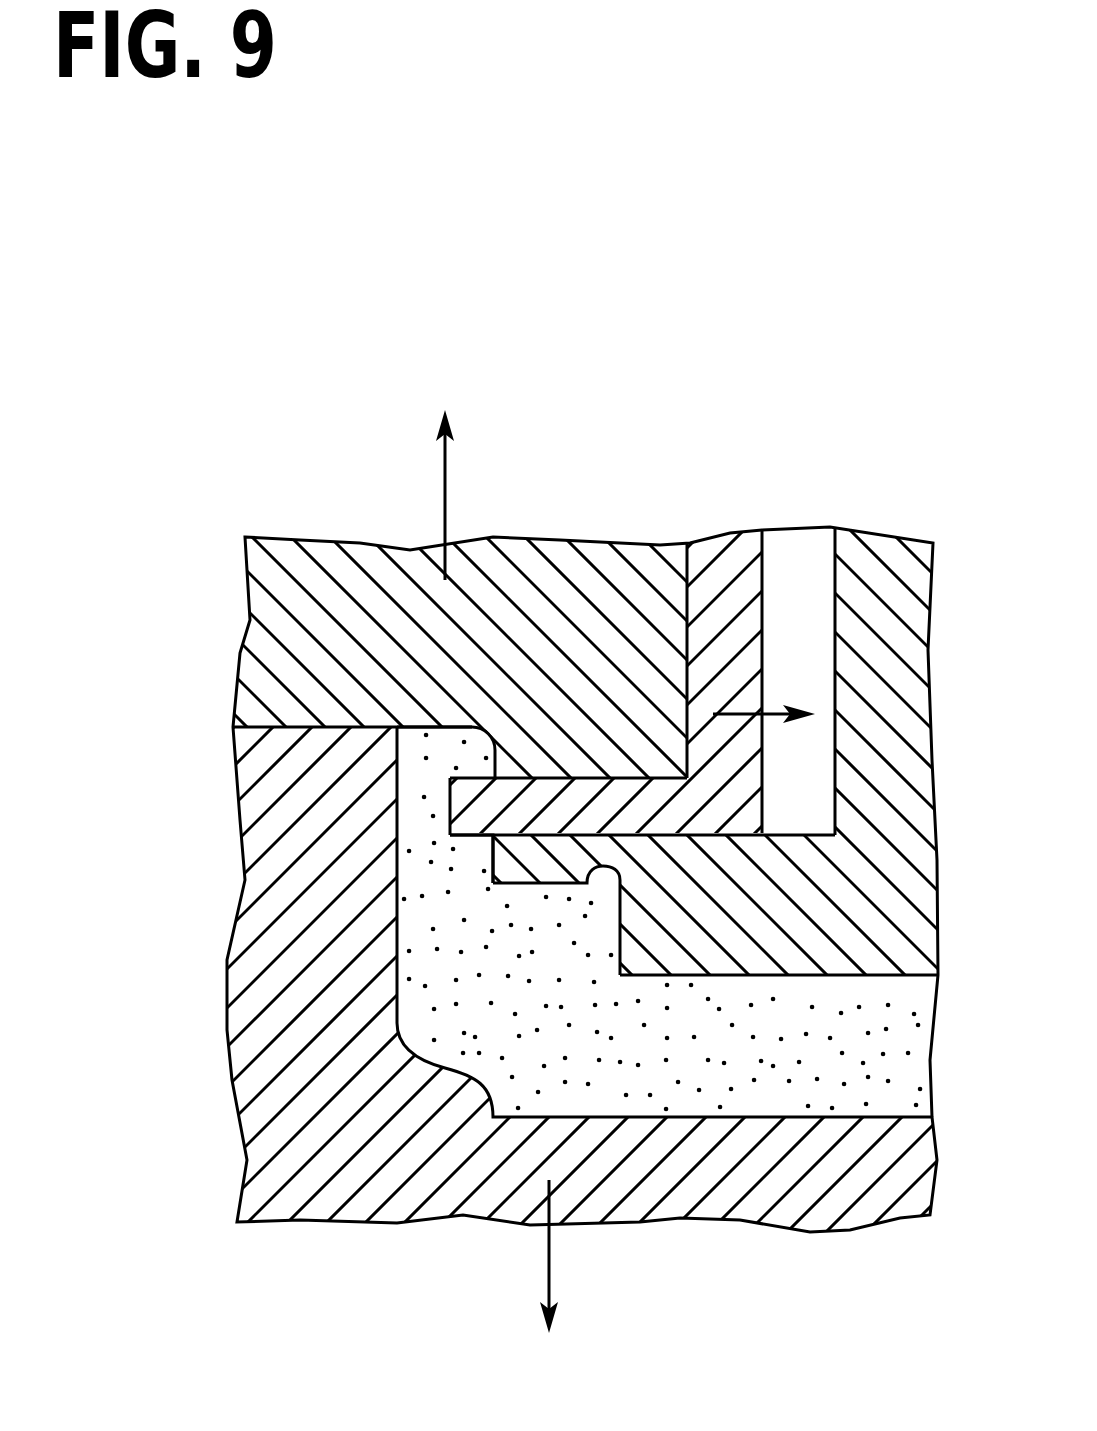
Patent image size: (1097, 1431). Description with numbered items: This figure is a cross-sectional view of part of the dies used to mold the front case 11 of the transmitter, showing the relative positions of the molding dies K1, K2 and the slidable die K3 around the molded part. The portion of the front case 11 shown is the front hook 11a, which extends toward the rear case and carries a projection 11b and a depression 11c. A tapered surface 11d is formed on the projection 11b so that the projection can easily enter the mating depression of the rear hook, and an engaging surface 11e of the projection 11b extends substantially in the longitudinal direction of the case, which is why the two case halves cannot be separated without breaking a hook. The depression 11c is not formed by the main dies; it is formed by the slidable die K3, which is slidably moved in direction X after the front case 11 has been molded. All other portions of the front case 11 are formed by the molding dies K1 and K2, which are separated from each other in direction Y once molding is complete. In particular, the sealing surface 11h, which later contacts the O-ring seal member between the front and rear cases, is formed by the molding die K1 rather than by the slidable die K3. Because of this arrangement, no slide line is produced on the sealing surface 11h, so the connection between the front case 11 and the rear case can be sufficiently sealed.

The molding die K1 is at (316, 583).
The molding die K2 is at (332, 1150).
The slidable die K3 is at (725, 568).
The direction X is at (777, 710).
The direction Y is at (443, 495).
The front case 11 is at (395, 1013).
The front hook 11a is at (417, 795).
The projection 11b is at (460, 744).
The depression 11c is at (493, 843).
The tapered surface 11d is at (493, 740).
The engaging surface 11e is at (553, 773).
The sealing surface 11h is at (550, 887).